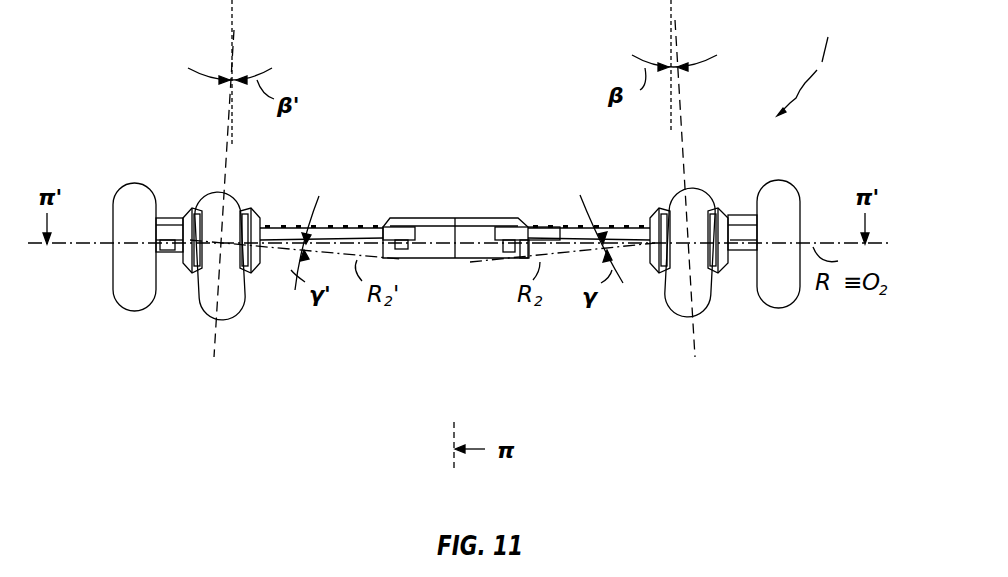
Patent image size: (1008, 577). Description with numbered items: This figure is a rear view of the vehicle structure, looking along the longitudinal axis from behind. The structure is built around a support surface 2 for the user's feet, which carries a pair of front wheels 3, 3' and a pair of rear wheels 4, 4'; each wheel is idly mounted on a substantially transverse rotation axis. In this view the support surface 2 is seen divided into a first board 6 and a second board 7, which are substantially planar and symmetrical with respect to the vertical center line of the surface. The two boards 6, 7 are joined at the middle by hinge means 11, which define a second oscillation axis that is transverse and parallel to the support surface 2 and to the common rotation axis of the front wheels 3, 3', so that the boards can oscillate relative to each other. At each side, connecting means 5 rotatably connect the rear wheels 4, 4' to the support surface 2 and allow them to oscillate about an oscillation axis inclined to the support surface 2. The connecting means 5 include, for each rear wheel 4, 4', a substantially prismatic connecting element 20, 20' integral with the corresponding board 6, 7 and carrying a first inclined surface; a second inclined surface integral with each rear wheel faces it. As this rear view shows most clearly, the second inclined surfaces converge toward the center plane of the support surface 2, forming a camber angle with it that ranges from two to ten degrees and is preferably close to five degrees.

The support surface 2 is at (532, 212).
The front wheel 3 is at (763, 231).
The front wheel 3' is at (113, 249).
The rear wheel 4 is at (665, 272).
The rear wheel 4' is at (236, 273).
The connecting means 5 is at (182, 293).
The first board 6 is at (562, 228).
The second board 7 is at (333, 230).
The hinge means 11 is at (435, 203).
The connecting element 20 is at (641, 213).
The connecting element 20' is at (266, 214).